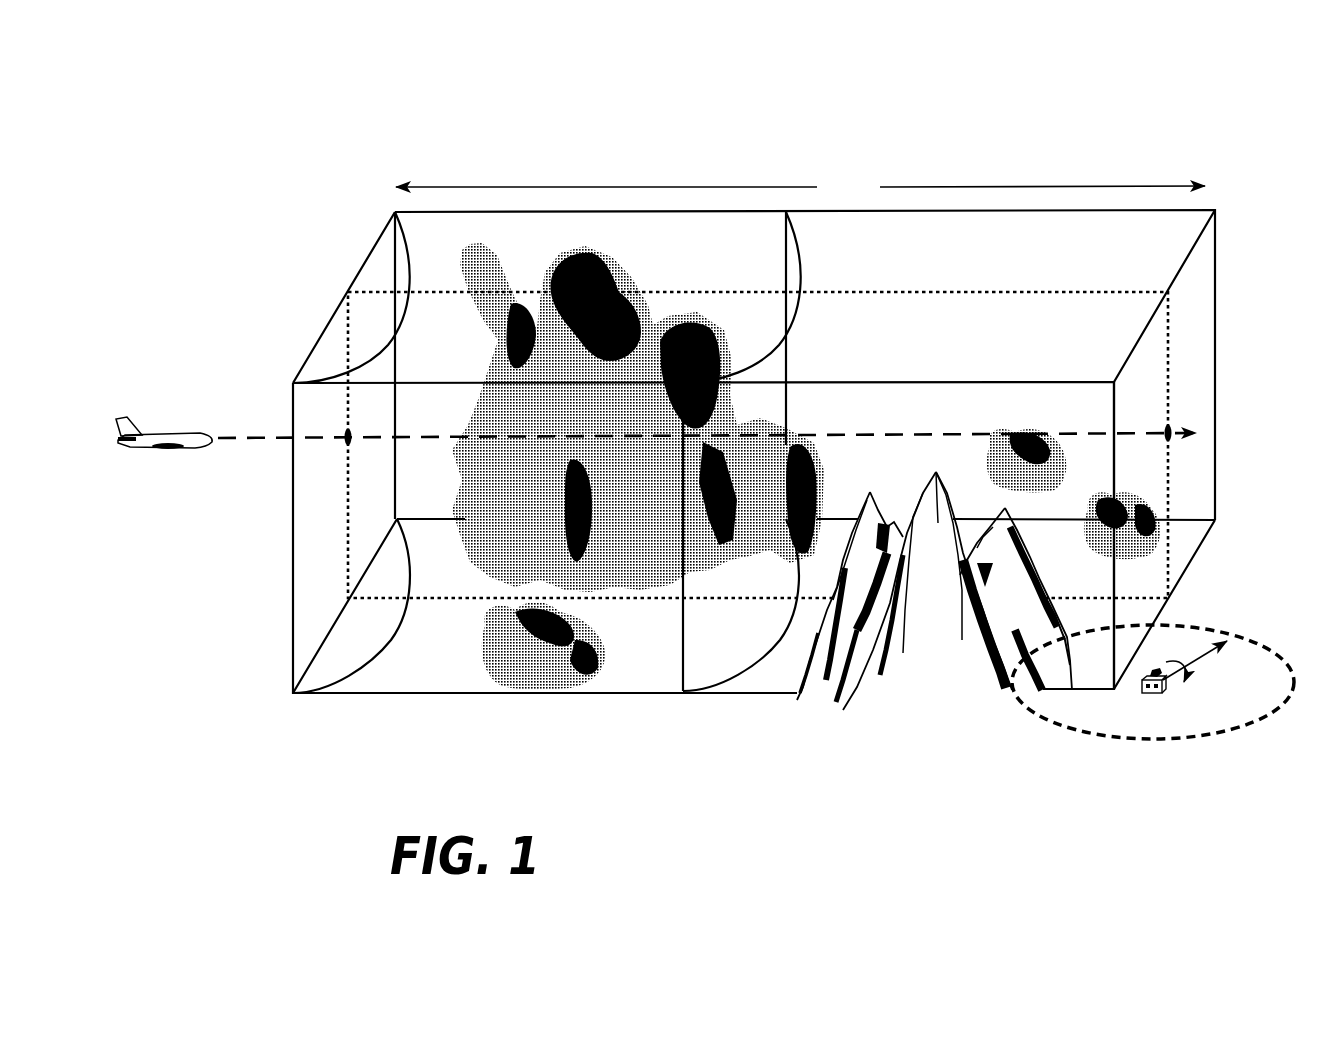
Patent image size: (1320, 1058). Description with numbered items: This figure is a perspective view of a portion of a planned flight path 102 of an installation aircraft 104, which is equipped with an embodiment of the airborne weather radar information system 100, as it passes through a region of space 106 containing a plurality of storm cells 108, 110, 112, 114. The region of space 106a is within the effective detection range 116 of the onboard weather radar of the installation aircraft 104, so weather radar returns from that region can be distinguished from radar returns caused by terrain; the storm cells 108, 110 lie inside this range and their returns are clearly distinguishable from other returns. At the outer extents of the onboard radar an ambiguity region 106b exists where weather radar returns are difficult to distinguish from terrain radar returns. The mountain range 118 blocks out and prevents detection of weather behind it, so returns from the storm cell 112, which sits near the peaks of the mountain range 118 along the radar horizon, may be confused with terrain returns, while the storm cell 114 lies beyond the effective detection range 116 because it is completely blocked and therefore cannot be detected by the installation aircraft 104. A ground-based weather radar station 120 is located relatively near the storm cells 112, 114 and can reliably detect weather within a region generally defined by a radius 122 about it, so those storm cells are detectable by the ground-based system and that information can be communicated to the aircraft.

The airborne weather radar information system 100 is at (160, 459).
The planned flight path 102 is at (253, 441).
The installation aircraft 104 is at (172, 434).
The region of space 106 is at (754, 382).
The region of space within effective detection range 106a is at (753, 164).
The ambiguity region 106b is at (965, 360).
The storm cell 108 is at (494, 343).
The storm cell 110 is at (592, 626).
The storm cell 112 is at (1031, 429).
The storm cell 114 is at (1134, 499).
The effective detection range 116 is at (800, 187).
The mountain range 118 is at (931, 706).
The ground-based weather radar station 120 is at (1157, 694).
The radius 122 is at (1080, 750).